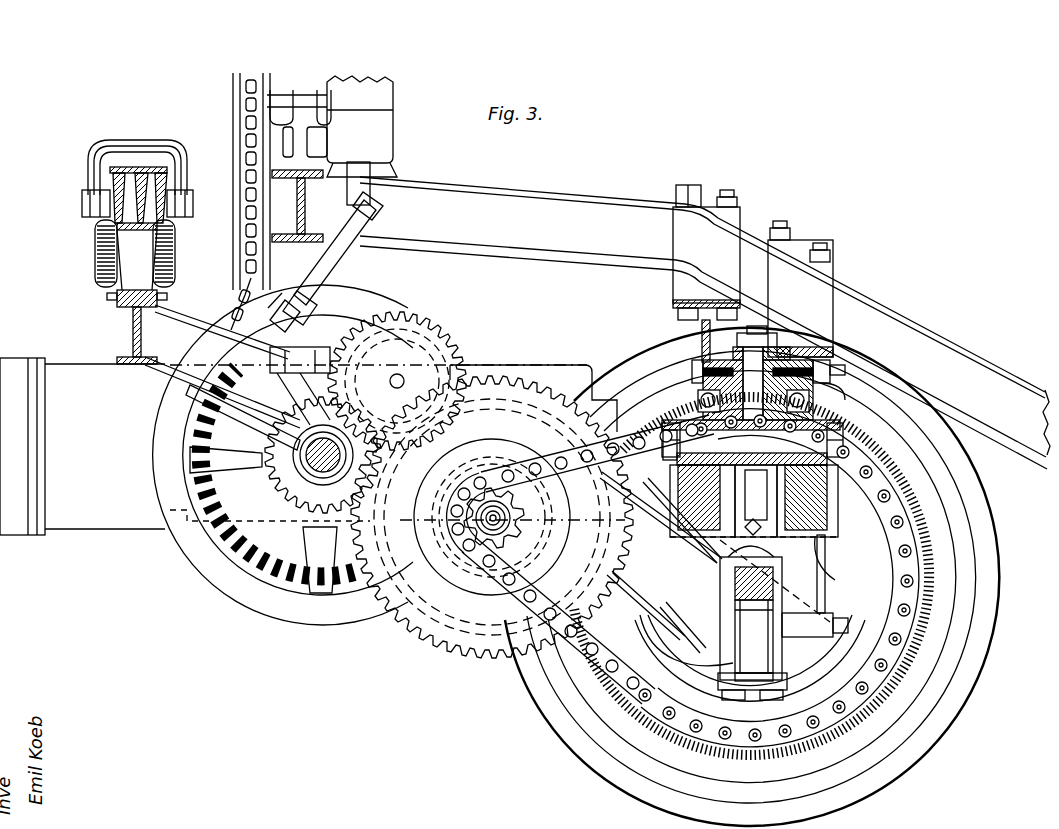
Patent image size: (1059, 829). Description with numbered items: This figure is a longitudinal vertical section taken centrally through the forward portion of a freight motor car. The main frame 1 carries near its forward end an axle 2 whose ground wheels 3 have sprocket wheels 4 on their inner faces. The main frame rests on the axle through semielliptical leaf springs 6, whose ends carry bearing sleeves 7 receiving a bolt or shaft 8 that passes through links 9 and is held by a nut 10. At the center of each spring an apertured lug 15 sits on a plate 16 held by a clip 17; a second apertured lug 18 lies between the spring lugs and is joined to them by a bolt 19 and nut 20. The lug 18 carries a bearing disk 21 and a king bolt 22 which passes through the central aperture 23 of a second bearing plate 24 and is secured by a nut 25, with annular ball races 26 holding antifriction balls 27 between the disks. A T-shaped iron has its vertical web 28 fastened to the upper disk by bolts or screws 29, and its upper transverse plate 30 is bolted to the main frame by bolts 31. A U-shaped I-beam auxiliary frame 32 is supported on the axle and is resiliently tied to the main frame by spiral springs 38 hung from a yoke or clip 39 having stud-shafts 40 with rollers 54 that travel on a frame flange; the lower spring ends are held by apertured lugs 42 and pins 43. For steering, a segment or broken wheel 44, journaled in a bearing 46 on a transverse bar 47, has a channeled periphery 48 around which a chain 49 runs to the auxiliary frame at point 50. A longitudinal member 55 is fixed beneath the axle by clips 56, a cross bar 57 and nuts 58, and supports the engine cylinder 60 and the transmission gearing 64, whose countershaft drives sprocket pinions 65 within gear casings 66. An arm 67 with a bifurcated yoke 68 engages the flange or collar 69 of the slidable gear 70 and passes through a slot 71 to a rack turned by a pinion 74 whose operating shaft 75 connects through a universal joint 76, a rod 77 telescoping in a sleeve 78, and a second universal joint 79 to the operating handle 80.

The main frame 1 is at (940, 335).
The axle 2 is at (755, 600).
The ground wheels 3 is at (975, 510).
The sprocket wheels 4 is at (877, 627).
The semielliptical leaf springs 6 is at (690, 490).
The bearing sleeves 7 is at (822, 637).
The bolt or shaft 8 is at (845, 622).
The links 9 is at (675, 560).
The nut 10 is at (710, 662).
The apertured lug 15 is at (843, 430).
The plate 16 is at (905, 455).
The clip 17 is at (670, 540).
The second apertured lug 18 is at (723, 470).
The bolt or shaft 19 is at (830, 440).
The nut 20 is at (660, 410).
The bearing disk 21 is at (840, 423).
The king bolt 22 is at (760, 350).
The central aperture 23 is at (830, 383).
The second bearing plate 24 is at (845, 368).
The nut 25 is at (752, 336).
The annular ball races 26 is at (702, 330).
The antifriction balls 27 is at (698, 395).
The vertical web 28 is at (700, 362).
The bolts or screws 29 is at (697, 360).
The upper transverse plate 30 is at (673, 302).
The bolts 31 is at (818, 240).
The auxiliary frame 32 is at (133, 340).
The spiral springs 38 is at (95, 268).
The yoke or clip 39 is at (148, 140).
The stud-shafts 40 is at (82, 203).
The apertured lugs 42 is at (132, 290).
The pins or bolts 43 is at (167, 297).
The segment or broken wheel 44 is at (233, 110).
The bearing 46 is at (330, 100).
The transverse bar 47 is at (305, 215).
The channeled periphery 48 is at (245, 90).
The chain 49 is at (240, 250).
The chain attachment point 50 is at (232, 312).
The rollers 54 is at (128, 172).
The longitudinal member 55 is at (590, 560).
The clips 56 is at (782, 660).
The cross bar 57 is at (689, 628).
The nuts 58 is at (747, 690).
The engine cylinder 60 is at (64, 375).
The transmission gearing 64 is at (280, 495).
The sprocket pinions 65 is at (520, 535).
The gear casings 66 is at (600, 690).
The arm 67 is at (270, 412).
The bifurcated yoke 68 is at (293, 440).
The flange or collar 69 is at (278, 470).
The slidable gear 70 is at (305, 515).
The slot 71 is at (280, 395).
The pinion 74 is at (270, 360).
The operating shaft 75 is at (290, 325).
The universal joint 76 is at (318, 305).
The rod 77 is at (296, 300).
The sleeve 78 is at (340, 250).
The second universal joint 79 is at (380, 216).
The operating handle 80 is at (372, 200).